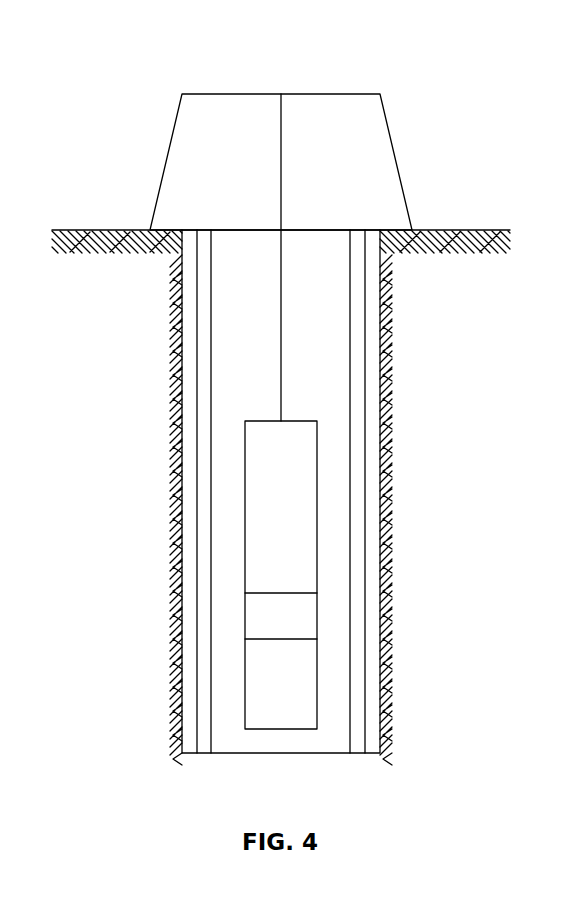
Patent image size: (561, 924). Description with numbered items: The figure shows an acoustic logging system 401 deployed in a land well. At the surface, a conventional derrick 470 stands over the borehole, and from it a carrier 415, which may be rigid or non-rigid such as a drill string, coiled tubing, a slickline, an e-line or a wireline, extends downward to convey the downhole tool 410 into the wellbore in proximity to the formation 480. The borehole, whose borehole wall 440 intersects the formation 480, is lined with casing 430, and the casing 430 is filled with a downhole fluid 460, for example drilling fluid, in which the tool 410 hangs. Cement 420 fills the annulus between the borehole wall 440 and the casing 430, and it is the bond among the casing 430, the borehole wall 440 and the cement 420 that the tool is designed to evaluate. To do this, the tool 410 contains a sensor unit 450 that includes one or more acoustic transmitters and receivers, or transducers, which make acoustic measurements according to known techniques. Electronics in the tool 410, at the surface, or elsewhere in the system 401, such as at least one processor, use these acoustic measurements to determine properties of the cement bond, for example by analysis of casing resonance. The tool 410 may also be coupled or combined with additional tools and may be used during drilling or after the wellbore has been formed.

The system 401 is at (376, 57).
The tool 410 is at (358, 575).
The carrier 415 is at (280, 356).
The cement 420 is at (188, 343).
The casing 430 is at (205, 503).
The borehole wall 440 is at (176, 425).
The sensor unit 450 is at (297, 630).
The downhole fluid 460 is at (231, 409).
The derrick 470 is at (165, 162).
The formation 480 is at (156, 561).